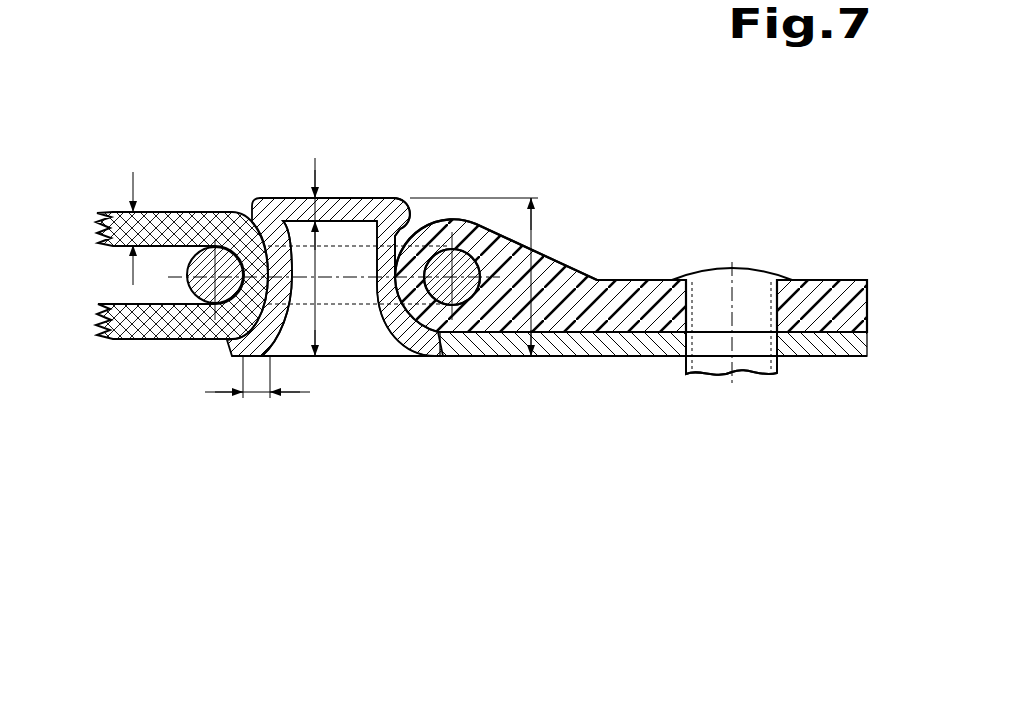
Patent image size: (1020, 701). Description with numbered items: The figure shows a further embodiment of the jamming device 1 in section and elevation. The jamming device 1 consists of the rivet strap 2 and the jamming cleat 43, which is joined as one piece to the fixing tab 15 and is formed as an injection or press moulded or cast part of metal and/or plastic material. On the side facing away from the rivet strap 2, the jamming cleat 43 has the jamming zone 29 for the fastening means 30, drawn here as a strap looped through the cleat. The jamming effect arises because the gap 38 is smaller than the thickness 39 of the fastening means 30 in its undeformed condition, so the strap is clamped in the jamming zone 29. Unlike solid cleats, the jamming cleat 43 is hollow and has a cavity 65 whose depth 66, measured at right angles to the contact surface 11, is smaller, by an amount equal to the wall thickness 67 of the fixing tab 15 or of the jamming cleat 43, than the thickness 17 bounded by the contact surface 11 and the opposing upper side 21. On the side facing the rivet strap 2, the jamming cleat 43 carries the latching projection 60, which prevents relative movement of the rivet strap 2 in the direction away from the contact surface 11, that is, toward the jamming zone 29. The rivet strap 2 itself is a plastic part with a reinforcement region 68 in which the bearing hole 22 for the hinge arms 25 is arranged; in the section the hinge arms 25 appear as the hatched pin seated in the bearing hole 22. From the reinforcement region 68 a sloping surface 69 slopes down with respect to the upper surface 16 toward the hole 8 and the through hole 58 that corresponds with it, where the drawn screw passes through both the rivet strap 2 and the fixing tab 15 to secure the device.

The jamming device 1 is at (523, 137).
The rivet strap 2 is at (802, 197).
The hole 8 is at (699, 398).
The contact surface 11 is at (810, 360).
The fixing tab 15 is at (550, 383).
The upper surface 16 is at (816, 330).
The thickness 17 is at (536, 236).
The upper side 21 is at (358, 196).
The bearing hole 22 is at (478, 223).
The hinge arms 25 is at (456, 287).
The jamming zone 29 is at (243, 209).
The fastening means 30 is at (138, 360).
The gap 38 is at (212, 396).
The thickness 39 is at (133, 178).
The jamming cleat 43 is at (377, 204).
The through hole 58 is at (690, 313).
The latching projection 60 is at (401, 210).
The cavity 65 is at (342, 368).
The depth 66 is at (313, 306).
The wall thickness 67 is at (302, 198).
The reinforcement region 68 is at (443, 233).
The sloping surface 69 is at (578, 268).